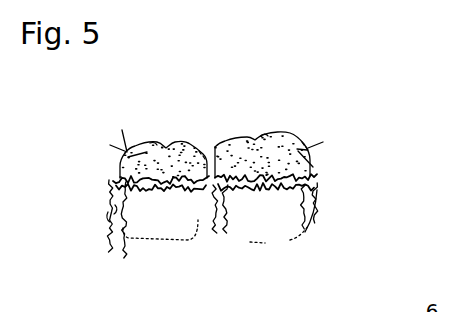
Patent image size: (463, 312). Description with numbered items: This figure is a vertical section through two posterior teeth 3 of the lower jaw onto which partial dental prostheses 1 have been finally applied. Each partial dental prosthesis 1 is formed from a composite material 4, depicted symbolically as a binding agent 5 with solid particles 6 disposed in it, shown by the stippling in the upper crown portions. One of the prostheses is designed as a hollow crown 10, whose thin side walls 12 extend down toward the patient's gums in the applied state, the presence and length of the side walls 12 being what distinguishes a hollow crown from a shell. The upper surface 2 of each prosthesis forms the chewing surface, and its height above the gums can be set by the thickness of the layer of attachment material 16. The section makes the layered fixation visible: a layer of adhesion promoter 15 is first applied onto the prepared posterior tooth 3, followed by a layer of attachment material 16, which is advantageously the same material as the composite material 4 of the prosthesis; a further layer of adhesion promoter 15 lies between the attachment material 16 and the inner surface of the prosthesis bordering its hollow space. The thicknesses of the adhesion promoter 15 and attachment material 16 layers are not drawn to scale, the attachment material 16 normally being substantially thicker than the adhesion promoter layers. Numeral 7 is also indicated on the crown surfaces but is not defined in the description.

The partial dental prosthesis 1 is at (169, 128).
The hollow crown 10 is at (190, 146).
The binding agent 5 is at (155, 145).
The surface 2 is at (200, 153).
The crown side surface 7 is at (201, 155).
The composite material 4 is at (127, 152).
The solid particles 6 is at (147, 152).
The side walls 12 is at (113, 183).
The adhesion promoter 15 is at (115, 193).
The attachment material 16 is at (110, 217).
The posterior tooth 3 is at (157, 228).